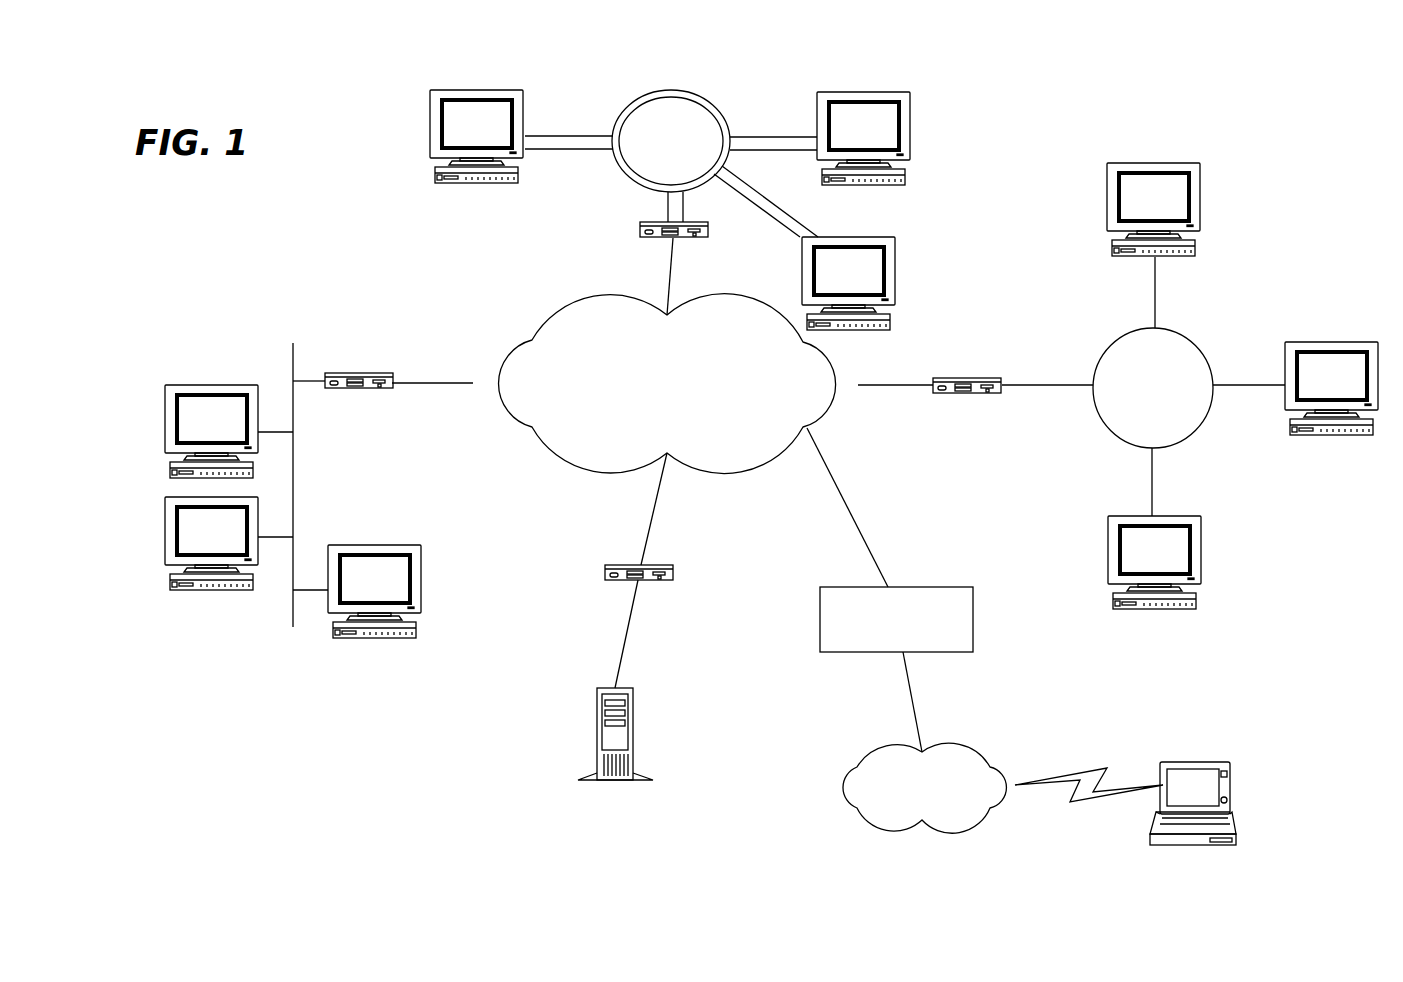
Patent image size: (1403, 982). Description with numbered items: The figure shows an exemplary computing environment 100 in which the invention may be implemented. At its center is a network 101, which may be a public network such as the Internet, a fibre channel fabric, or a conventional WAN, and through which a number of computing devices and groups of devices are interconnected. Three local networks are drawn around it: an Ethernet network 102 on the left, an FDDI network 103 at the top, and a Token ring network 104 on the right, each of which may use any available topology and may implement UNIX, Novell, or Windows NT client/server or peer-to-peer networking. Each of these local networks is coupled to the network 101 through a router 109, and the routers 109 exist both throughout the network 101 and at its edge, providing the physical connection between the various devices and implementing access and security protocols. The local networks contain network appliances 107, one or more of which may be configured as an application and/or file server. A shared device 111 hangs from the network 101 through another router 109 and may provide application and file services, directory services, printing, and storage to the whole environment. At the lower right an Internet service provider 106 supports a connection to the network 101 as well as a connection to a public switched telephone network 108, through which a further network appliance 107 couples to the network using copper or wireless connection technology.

The computing environment 100 is at (1288, 142).
The network 101 is at (523, 326).
The Ethernet network 102 is at (218, 318).
The FDDI network 103 is at (521, 235).
The Token ring network 104 is at (1270, 523).
The Internet service provider 106 is at (903, 592).
The network appliance 107 is at (425, 118).
The public switched telephone network 108 is at (873, 745).
The router 109 is at (397, 387).
The shared device 111 is at (635, 728).